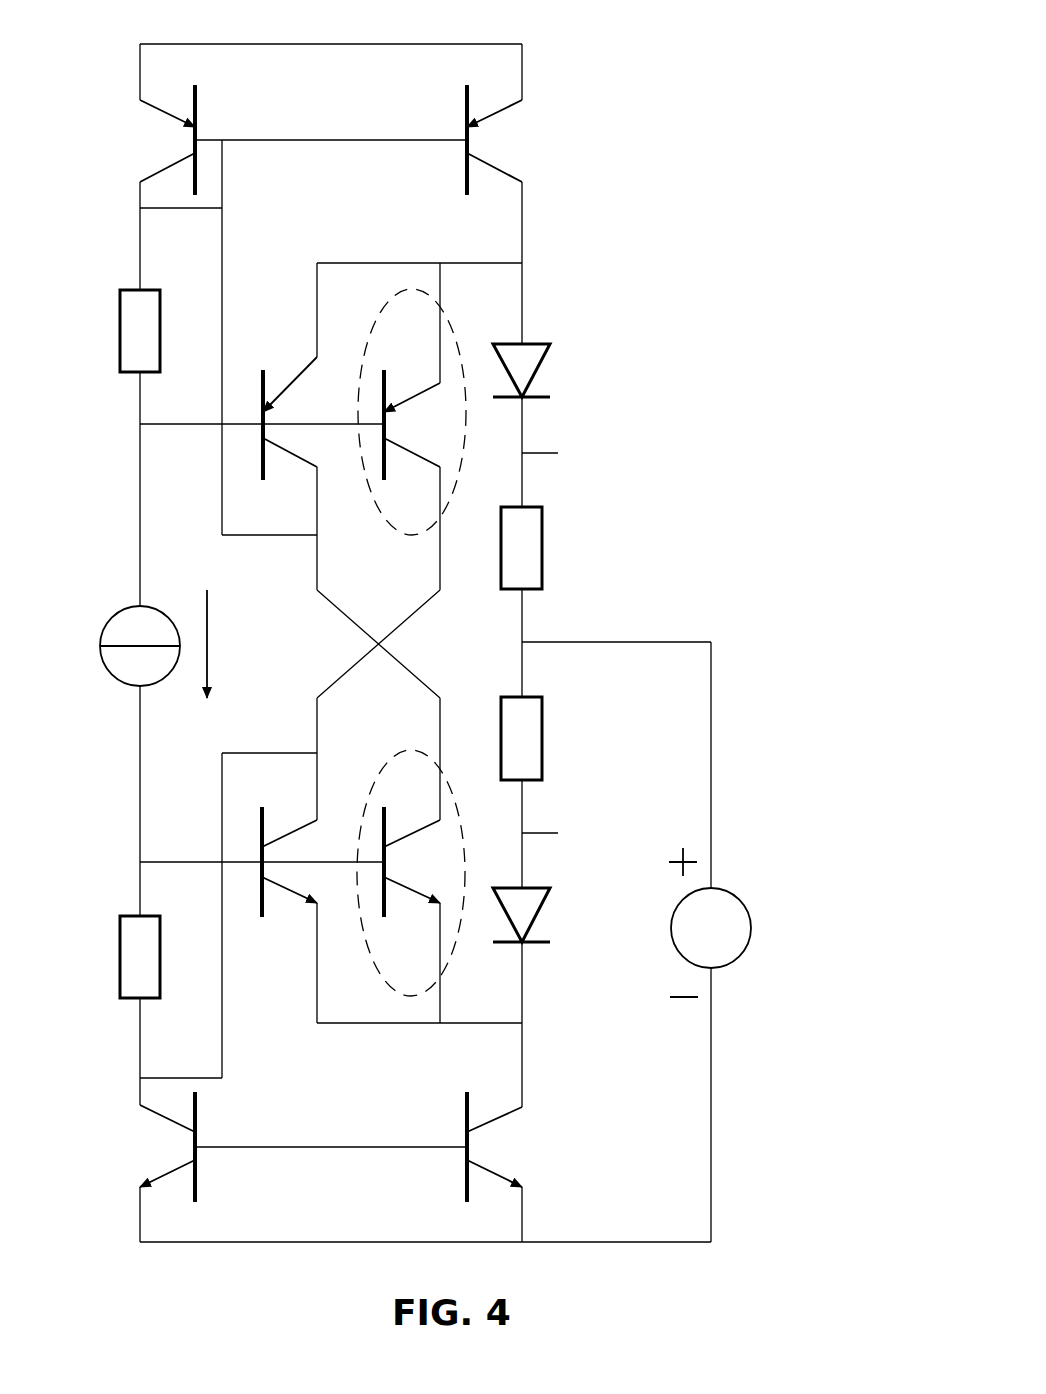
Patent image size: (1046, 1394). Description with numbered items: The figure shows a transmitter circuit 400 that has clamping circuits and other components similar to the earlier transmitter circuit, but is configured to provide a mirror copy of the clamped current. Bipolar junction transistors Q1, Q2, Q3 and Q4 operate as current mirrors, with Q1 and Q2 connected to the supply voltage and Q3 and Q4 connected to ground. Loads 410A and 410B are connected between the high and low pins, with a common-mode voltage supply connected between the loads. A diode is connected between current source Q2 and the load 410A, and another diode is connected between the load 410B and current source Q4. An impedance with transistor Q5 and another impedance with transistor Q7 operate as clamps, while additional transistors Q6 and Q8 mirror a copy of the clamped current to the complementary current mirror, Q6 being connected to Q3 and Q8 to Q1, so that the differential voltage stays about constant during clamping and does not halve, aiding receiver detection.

The transmitter circuit 400 is at (771, 52).
The load 410A is at (530, 506).
The load 410B is at (530, 695).